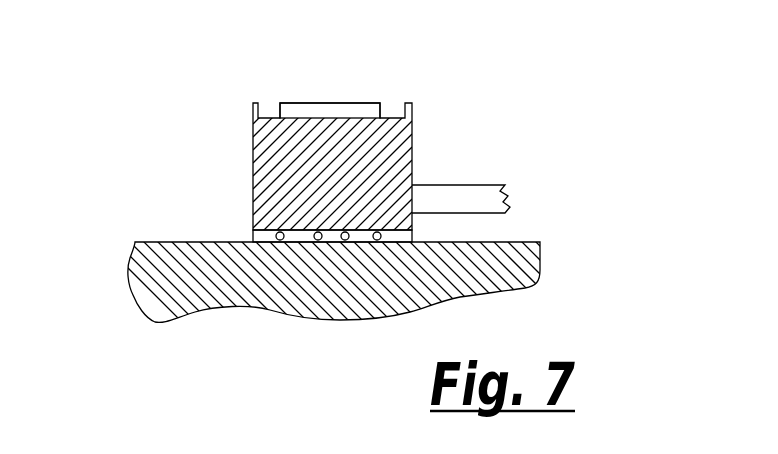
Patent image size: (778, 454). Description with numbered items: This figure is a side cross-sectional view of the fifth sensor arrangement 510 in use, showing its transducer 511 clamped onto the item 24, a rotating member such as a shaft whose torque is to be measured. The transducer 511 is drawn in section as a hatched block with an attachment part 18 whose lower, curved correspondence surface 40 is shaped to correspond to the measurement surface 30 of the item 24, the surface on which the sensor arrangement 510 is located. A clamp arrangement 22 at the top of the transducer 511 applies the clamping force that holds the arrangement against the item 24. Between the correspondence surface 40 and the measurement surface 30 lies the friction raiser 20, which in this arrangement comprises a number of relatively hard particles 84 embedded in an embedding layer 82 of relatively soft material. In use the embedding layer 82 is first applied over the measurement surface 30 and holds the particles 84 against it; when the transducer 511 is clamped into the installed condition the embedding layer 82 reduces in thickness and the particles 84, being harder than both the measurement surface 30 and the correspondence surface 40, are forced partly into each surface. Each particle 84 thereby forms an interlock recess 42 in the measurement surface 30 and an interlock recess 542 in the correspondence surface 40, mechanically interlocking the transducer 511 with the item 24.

The attachment part 18 is at (300, 145).
The friction raiser 20 is at (365, 228).
The clamp arrangement 22 is at (350, 100).
The item 24 is at (157, 292).
The measurement surface 30 is at (397, 242).
The correspondence surface 40 is at (258, 242).
The interlock recess 42 is at (314, 242).
The embedding layer 82 is at (281, 242).
The relatively hard particle 84 is at (378, 242).
The fifth sensor arrangement 510 is at (520, 75).
The transducer 511 is at (250, 150).
The interlock recess 542 is at (285, 238).